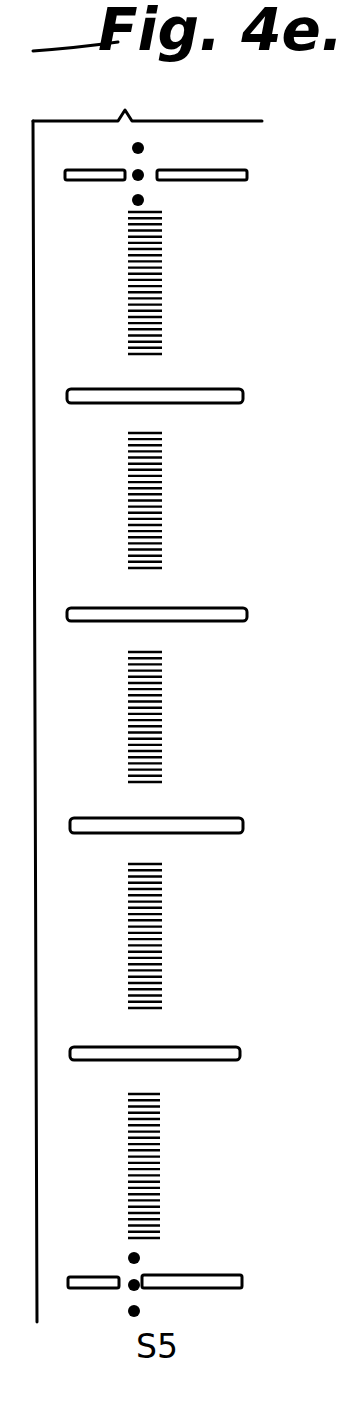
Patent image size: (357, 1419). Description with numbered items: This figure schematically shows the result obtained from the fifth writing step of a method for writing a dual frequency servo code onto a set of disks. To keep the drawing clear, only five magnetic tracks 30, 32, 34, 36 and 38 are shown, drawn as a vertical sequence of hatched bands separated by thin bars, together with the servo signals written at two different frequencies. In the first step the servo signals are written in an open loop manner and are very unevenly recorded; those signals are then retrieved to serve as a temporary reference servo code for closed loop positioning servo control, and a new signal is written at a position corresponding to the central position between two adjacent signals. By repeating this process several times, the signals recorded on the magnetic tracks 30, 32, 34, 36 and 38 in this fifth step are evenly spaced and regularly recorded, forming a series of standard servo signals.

The magnetic track 30 is at (165, 288).
The magnetic track 32 is at (165, 508).
The magnetic track 34 is at (164, 720).
The magnetic track 36 is at (164, 938).
The magnetic track 38 is at (162, 1167).